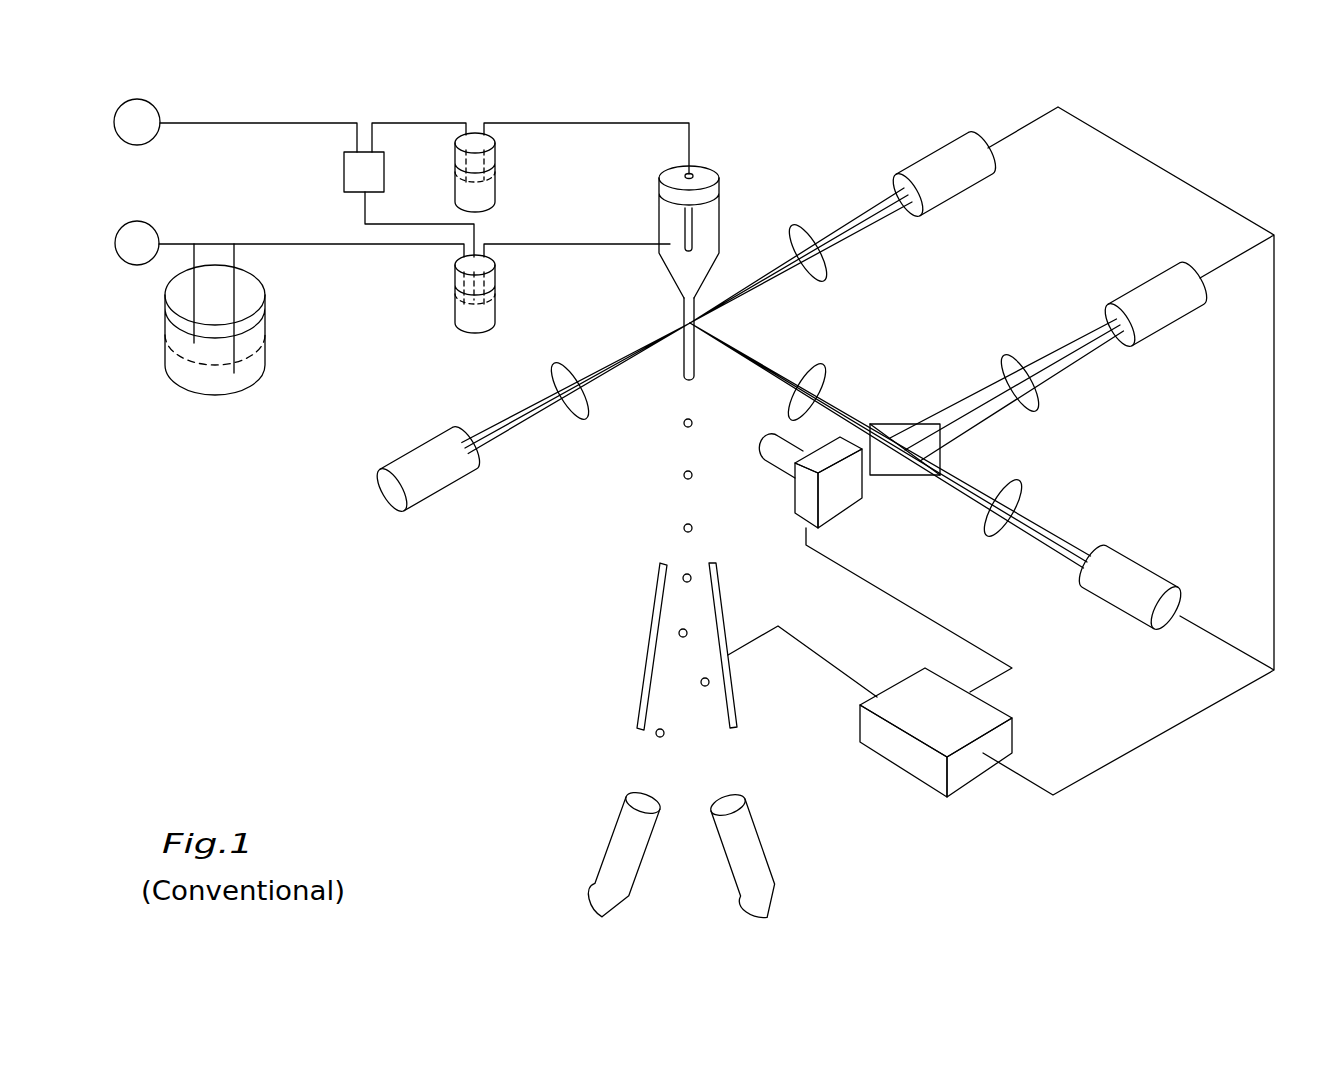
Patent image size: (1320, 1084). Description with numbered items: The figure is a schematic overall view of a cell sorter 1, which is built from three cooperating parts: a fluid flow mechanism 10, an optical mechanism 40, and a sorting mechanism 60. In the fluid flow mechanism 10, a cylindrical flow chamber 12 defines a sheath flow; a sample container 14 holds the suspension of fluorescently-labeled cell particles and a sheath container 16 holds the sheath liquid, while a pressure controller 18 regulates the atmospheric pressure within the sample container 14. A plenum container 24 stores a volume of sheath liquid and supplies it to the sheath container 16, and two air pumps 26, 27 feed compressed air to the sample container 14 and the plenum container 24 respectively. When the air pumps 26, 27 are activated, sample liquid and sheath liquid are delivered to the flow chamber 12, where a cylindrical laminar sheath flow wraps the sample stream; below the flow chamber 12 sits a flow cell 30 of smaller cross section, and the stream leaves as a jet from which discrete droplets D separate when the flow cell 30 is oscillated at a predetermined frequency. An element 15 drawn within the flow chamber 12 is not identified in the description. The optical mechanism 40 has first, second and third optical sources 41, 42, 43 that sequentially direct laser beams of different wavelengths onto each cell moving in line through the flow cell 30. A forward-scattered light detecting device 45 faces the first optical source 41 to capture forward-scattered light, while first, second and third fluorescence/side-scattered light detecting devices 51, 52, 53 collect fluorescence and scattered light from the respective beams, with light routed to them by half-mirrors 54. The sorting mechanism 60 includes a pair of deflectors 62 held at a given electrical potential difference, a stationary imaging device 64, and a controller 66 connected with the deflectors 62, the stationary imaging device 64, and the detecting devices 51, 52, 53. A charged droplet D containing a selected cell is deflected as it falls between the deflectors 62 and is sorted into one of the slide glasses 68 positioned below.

The cell sorter 1 is at (203, 733).
The fluid flow mechanism 10 is at (368, 352).
The flow chamber 12 is at (687, 232).
The sample container 14 is at (495, 170).
The sample tube 15 is at (693, 228).
The sheath container 16 is at (495, 293).
The pressure controller 18 is at (344, 172).
The plenum container 24 is at (262, 330).
The air pump 26 is at (141, 145).
The air pump 27 is at (144, 222).
The flow cell 30 is at (684, 312).
The optical mechanism 40 is at (1212, 168).
The first optical source 41 is at (436, 496).
The second optical source 42 is at (441, 503).
The third optical source 43 is at (441, 503).
The forward-scattered light detecting device 45 is at (963, 191).
The first fluorescence/side-scattered light detecting device 51 is at (1145, 283).
The second fluorescence/side-scattered light detecting device 52 is at (1168, 424).
The third fluorescence/side-scattered light detecting device 53 is at (1150, 571).
The half-mirror 54 is at (908, 424).
The sorting mechanism 60 is at (525, 708).
The deflectors 62 is at (650, 650).
The stationary imaging device 64 is at (840, 513).
The controller 66 is at (880, 757).
The slide glasses 68 is at (766, 855).
The droplet D is at (684, 476).